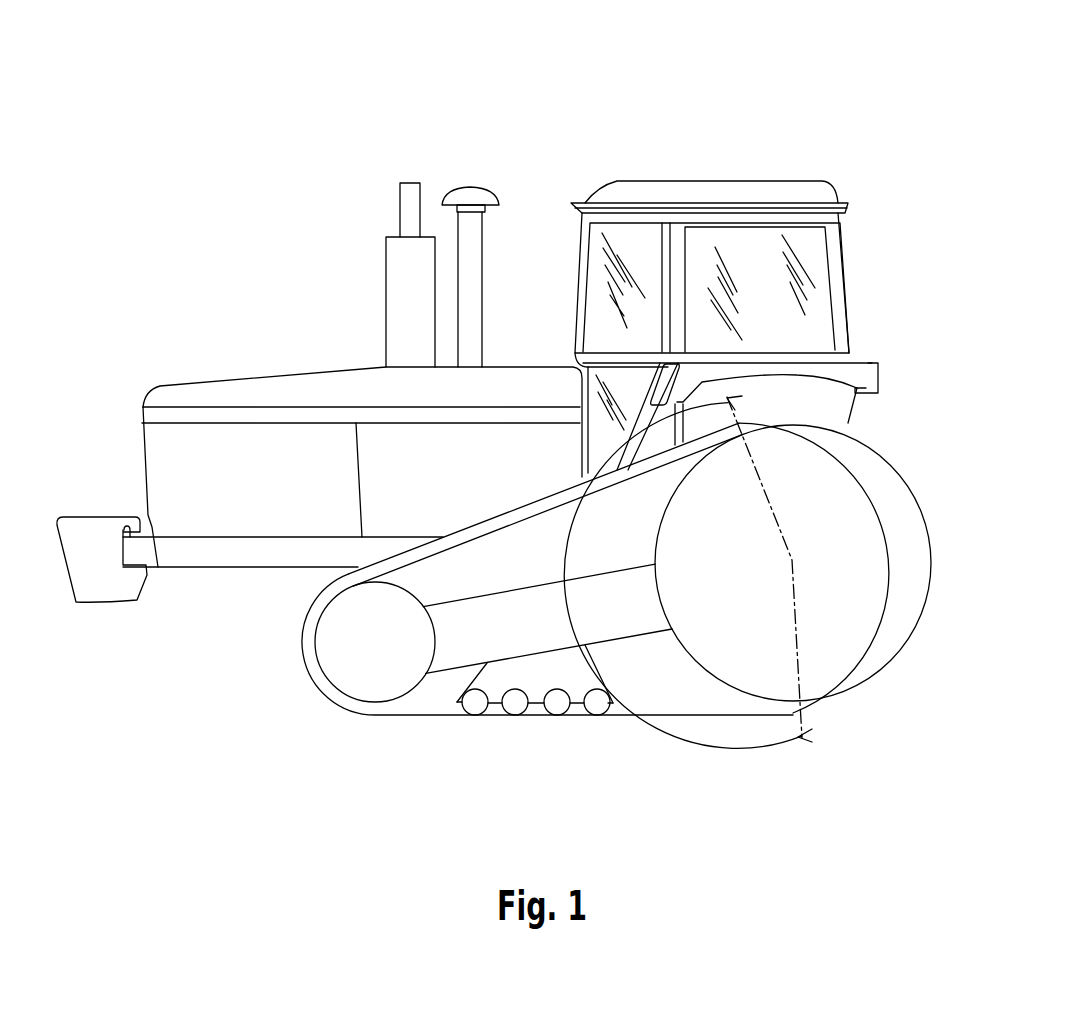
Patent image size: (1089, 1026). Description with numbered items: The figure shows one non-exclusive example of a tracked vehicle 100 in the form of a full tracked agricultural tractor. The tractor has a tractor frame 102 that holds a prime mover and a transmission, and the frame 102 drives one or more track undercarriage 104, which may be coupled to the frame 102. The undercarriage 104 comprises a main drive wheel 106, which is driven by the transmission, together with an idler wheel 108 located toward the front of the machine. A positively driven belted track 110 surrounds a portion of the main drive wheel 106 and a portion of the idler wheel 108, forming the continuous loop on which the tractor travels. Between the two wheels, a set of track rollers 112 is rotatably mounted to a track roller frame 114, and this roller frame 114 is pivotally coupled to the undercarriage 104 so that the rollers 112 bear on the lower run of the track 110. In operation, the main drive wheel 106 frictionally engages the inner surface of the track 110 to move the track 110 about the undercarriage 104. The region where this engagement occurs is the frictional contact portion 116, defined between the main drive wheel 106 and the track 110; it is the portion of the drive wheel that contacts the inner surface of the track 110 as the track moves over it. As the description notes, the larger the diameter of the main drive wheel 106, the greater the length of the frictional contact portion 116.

The tracked vehicle 100 is at (285, 143).
The tractor frame 102 is at (217, 550).
The track undercarriage 104 is at (403, 730).
The main drive wheel 106 is at (755, 589).
The idler wheel 108 is at (398, 659).
The belted track 110 is at (548, 500).
The track rollers 112 is at (599, 705).
The track roller frame 114 is at (583, 667).
The frictional contact portion 116 is at (959, 513).